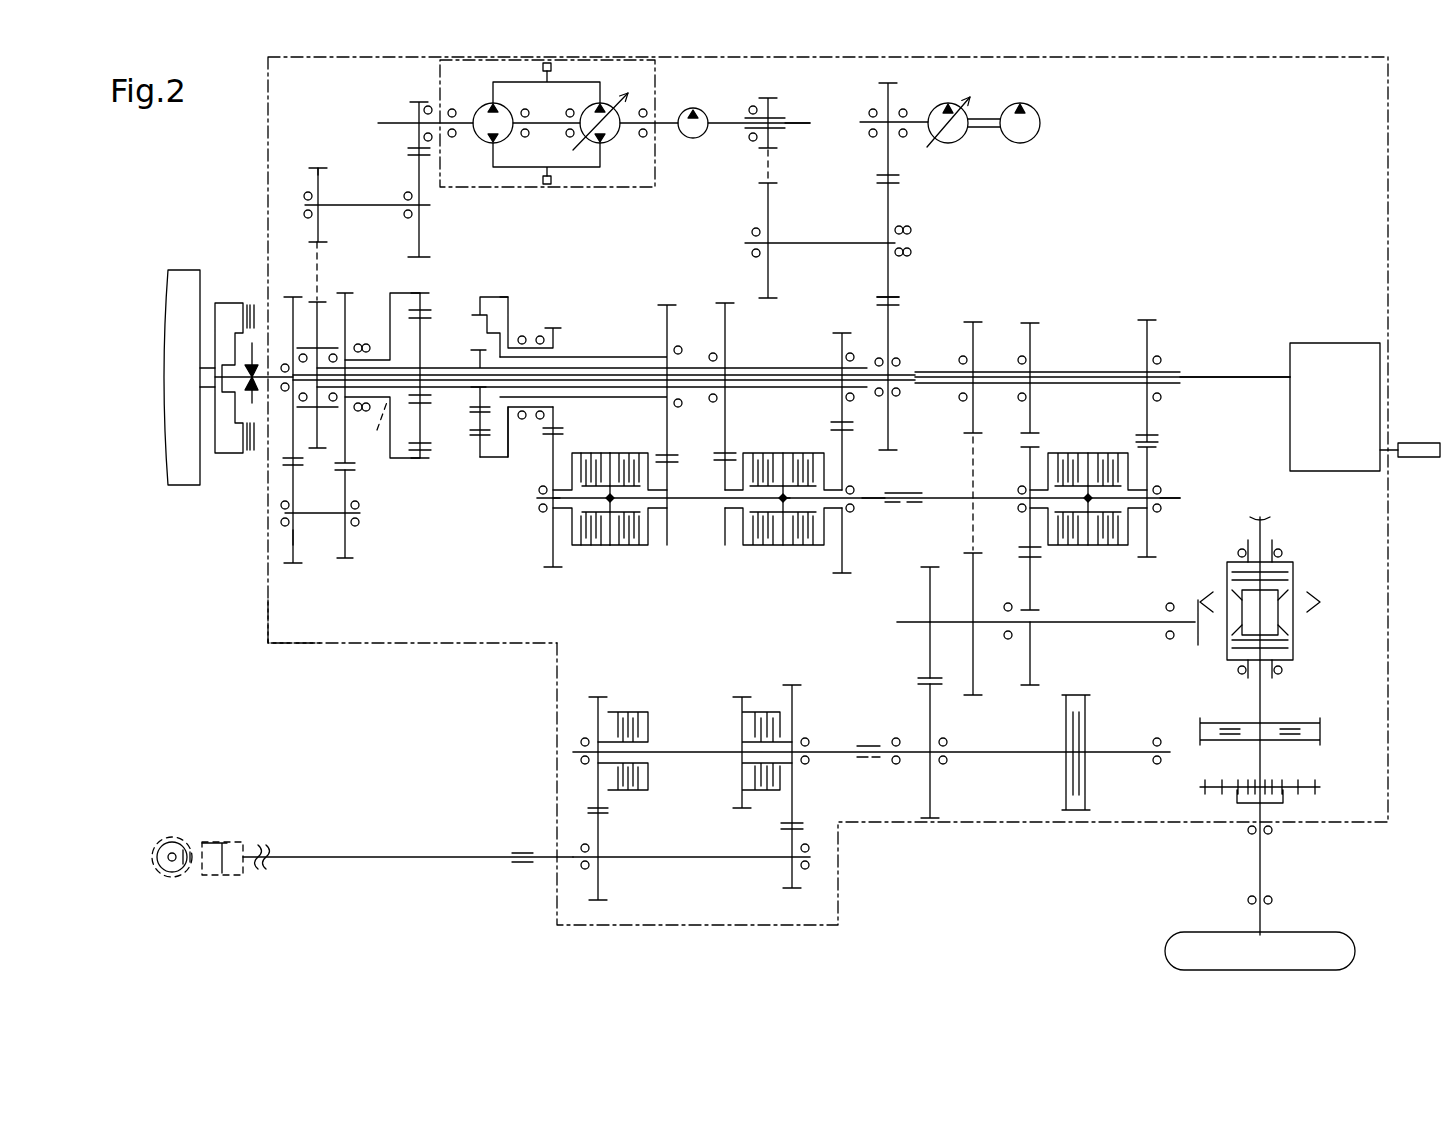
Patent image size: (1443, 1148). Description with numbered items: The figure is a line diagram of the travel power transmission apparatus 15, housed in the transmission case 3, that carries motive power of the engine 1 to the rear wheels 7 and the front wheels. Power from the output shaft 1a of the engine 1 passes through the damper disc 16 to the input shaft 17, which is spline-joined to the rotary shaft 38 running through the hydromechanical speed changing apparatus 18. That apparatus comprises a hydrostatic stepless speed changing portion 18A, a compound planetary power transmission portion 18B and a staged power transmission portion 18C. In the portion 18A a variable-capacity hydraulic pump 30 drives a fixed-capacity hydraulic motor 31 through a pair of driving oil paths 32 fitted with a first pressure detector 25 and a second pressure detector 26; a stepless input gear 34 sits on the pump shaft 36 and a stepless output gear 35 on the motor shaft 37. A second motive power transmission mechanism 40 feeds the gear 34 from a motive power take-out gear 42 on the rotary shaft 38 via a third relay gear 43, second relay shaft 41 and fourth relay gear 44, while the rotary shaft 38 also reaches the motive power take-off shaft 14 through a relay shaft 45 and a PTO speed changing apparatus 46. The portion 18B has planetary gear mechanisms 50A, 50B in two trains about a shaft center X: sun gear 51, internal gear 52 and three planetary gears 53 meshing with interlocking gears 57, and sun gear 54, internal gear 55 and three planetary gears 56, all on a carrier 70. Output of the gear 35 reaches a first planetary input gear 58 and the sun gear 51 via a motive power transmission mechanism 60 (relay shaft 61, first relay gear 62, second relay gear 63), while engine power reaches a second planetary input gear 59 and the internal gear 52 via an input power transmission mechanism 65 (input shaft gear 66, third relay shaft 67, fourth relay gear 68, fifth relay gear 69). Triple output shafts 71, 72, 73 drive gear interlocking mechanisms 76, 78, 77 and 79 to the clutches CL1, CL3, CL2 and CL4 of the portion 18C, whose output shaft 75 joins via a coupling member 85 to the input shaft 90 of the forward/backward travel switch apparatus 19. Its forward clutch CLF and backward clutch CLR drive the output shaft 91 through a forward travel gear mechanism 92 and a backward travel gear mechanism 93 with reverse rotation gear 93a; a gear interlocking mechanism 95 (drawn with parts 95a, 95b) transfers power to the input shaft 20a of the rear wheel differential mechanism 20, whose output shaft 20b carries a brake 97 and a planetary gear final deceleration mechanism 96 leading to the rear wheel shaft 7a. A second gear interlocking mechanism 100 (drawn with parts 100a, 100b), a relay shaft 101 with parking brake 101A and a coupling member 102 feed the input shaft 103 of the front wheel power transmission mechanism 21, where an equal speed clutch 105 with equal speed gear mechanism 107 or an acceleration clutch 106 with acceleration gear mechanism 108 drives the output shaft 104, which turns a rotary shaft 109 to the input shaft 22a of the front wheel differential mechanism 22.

The engine 1 is at (178, 272).
The output shaft 1a is at (205, 377).
The transmission case 3 is at (268, 612).
The rear wheels 7 is at (1165, 955).
The rear wheel shaft 7a is at (1265, 870).
The motive power take-off shaft 14 is at (1418, 443).
The travel power transmission apparatus 15 is at (1220, 225).
The damper disc 16 is at (257, 345).
The input shaft 17 is at (232, 375).
The hydromechanical speed changing apparatus 18 is at (340, 605).
The hydrostatic stepless speed changing portion 18A is at (598, 200).
The compound planetary power transmission portion 18B is at (455, 525).
The staged power transmission portion 18C is at (778, 590).
The forward/backward travel switch apparatus 19 is at (1190, 462).
The rear wheel differential mechanism 20 is at (1310, 545).
The input shaft 20a is at (1130, 625).
The output shaft 20b is at (1262, 690).
The front wheel power transmission mechanism 21 is at (565, 700).
The front wheel differential mechanism 22 is at (165, 835).
The input shaft 22a is at (215, 842).
The first pressure detector 25 is at (543, 67).
The second pressure detector 26 is at (545, 185).
The hydraulic pump 30 is at (625, 140).
The hydraulic motor 31 is at (490, 140).
The driving oil paths 32 is at (580, 95).
The stepless input gear 34 is at (770, 100).
The stepless output gear 35 is at (415, 100).
The pump shaft 36 is at (795, 128).
The motor shaft 37 is at (385, 122).
The rotary shaft 38 is at (780, 377).
The second motive power transmission mechanism 40 is at (920, 200).
The second relay shaft 41 is at (818, 245).
The motive power take-out gear 42 is at (890, 335).
The third relay gear 43 is at (888, 210).
The fourth relay gear 44 is at (770, 212).
The relay shaft 45 is at (1205, 372).
The PTO speed changing apparatus 46 is at (1343, 343).
The planetary gear mechanism 50A is at (415, 470).
The planetary gear mechanism 50B is at (508, 298).
The sun gear 51 is at (470, 368).
The internal gear 52 is at (425, 300).
The planetary gears 53 is at (425, 318).
The sun gear 54 is at (480, 392).
The internal gear 55 is at (490, 460).
The planetary gears 56 is at (548, 440).
The interlocking gears 57 is at (430, 447).
The first planetary input gear 58 is at (317, 300).
The second planetary input gear 59 is at (355, 467).
The motive power transmission mechanism 60 is at (295, 228).
The relay shaft 61 is at (362, 205).
The first relay gear 62 is at (418, 235).
The second relay gear 63 is at (305, 178).
The input power transmission mechanism 65 is at (285, 553).
The input shaft gear 66 is at (293, 452).
The third relay shaft 67 is at (320, 512).
The fourth relay gear 68 is at (290, 535).
The fifth relay gear 69 is at (350, 558).
The carrier 70 is at (497, 320).
The first output shaft 71 is at (530, 338).
The second output shaft 72 is at (610, 356).
The third output shaft 73 is at (762, 372).
The output shaft 75 is at (868, 505).
The first gear interlocking mechanism 76 is at (543, 470).
The second gear interlocking mechanism 77 is at (850, 433).
The third gear interlocking mechanism 78 is at (655, 452).
The fourth gear interlocking mechanism 79 is at (735, 450).
The coupling member 85 is at (908, 492).
The input shaft 90 is at (937, 578).
The output shaft 91 is at (933, 370).
The forward travel gear mechanism 92 is at (1160, 430).
The backward travel gear mechanism 93 is at (1042, 428).
The reverse rotation gear 93a is at (1030, 688).
The gear interlocking mechanism 95 is at (968, 428).
The gear 95a is at (980, 325).
The gear 95b is at (978, 580).
The planetary gear final deceleration mechanism 96 is at (1300, 800).
The brake 97 is at (1300, 745).
The second gear interlocking mechanism 100 is at (915, 682).
The shaft 100a is at (928, 640).
The shaft 100b is at (928, 778).
The relay shaft 101 is at (998, 758).
The parking brake 101A is at (1090, 780).
The coupling member 102 is at (862, 742).
The input shaft 103 is at (695, 755).
The output shaft 104 is at (676, 860).
The equal speed clutch 105 is at (620, 712).
The acceleration clutch 106 is at (770, 712).
The equal speed gear mechanism 107 is at (575, 810).
The acceleration gear mechanism 108 is at (812, 827).
The rotary shaft 109 is at (395, 862).
The first clutch CL1 is at (590, 550).
The second clutch CL2 is at (812, 548).
The third clutch CL3 is at (632, 548).
The fourth clutch CL4 is at (758, 548).
The backward clutch CLR is at (1065, 548).
The forward clutch CLF is at (1105, 548).
The shaft center X is at (378, 428).